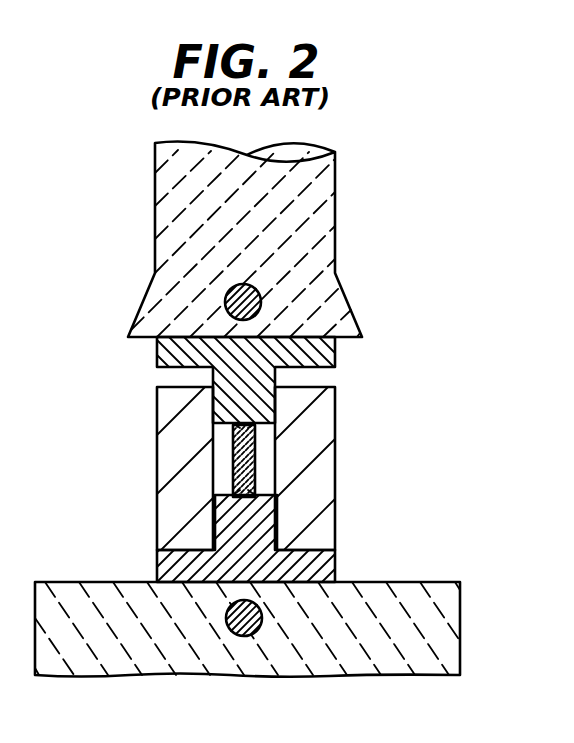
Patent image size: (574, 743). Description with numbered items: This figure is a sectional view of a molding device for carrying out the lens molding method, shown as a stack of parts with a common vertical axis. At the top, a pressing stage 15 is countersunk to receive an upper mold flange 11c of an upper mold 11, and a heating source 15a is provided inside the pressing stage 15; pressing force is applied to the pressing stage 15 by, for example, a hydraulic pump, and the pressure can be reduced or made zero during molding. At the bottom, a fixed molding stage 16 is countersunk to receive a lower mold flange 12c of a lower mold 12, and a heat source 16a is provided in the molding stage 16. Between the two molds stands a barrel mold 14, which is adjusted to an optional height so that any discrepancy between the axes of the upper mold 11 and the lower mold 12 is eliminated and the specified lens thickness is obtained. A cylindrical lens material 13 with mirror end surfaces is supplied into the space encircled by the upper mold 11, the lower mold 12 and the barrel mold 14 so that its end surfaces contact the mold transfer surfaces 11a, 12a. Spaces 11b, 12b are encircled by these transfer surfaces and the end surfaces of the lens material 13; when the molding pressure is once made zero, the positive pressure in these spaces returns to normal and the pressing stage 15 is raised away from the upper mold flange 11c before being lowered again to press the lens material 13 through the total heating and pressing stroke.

The upper mold 11 is at (148, 364).
The mold transfer surface 11a is at (235, 423).
The space 11b is at (255, 423).
The upper mold flange 11c is at (344, 356).
The lower mold 12 is at (149, 557).
The mold transfer surface 12a is at (235, 496).
The space 12b is at (257, 496).
The lower mold flange 12c is at (327, 575).
The lens material 13 is at (233, 462).
The barrel mold 14 is at (283, 468).
The pressing stage 15 is at (345, 204).
The heating source 15a is at (229, 291).
The molding stage 16 is at (284, 668).
The heat source 16a is at (239, 637).